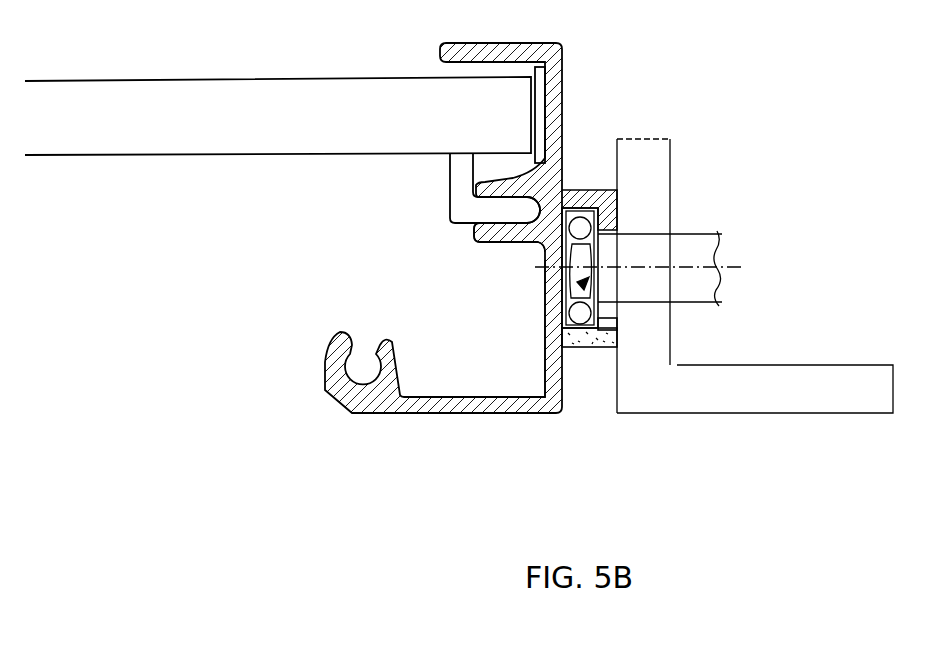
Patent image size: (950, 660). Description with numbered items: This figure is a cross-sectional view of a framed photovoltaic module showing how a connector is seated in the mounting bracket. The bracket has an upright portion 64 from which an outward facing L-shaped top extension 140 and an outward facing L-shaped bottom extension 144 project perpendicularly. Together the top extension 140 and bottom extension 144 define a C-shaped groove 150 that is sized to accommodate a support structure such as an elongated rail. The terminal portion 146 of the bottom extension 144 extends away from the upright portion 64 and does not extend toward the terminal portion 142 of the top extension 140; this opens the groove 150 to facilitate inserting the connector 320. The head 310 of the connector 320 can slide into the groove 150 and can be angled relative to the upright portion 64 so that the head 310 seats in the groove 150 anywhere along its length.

The upright portion 64 is at (545, 367).
The top extension 140 is at (578, 196).
The terminal end of top extension 142 is at (612, 202).
The bottom extension 144 is at (598, 346).
The terminal portion of bottom extension 146 is at (600, 338).
The groove 150 is at (563, 282).
The head 310 is at (562, 301).
The bolt 320 is at (547, 247).